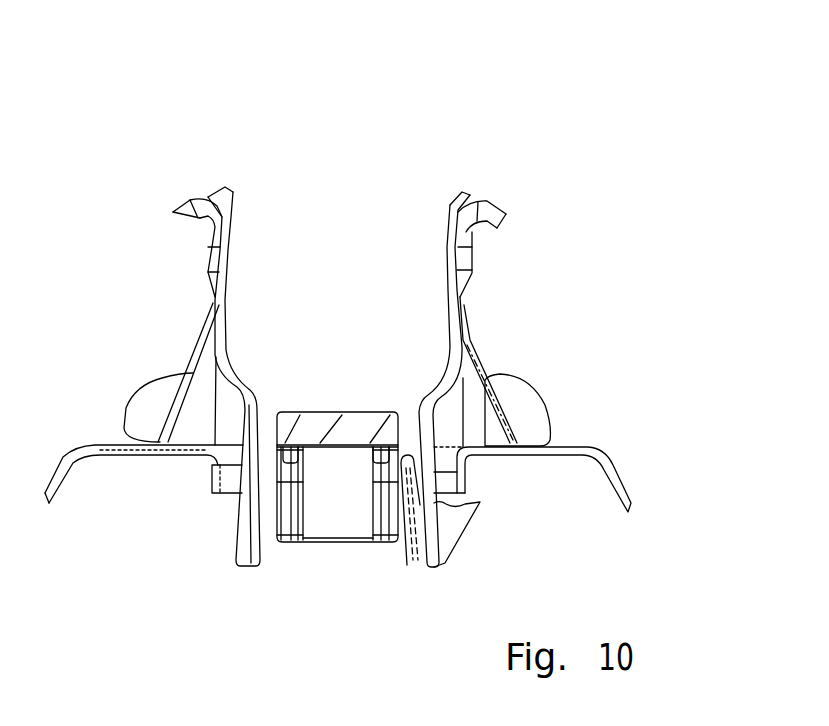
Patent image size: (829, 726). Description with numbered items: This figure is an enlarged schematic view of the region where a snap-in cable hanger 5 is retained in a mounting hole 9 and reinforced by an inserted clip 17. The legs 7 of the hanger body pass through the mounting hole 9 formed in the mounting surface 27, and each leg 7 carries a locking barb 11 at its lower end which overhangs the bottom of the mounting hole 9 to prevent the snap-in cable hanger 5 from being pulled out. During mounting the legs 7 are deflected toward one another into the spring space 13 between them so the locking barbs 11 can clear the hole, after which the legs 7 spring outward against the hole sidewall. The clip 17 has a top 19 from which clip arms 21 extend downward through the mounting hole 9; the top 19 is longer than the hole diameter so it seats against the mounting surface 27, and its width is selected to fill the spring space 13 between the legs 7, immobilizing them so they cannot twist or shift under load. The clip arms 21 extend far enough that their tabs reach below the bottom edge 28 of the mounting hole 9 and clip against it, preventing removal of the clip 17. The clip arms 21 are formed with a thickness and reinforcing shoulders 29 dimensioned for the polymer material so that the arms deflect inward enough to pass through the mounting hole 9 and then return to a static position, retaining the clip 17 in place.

The snap-in cable hanger 5 is at (229, 194).
The leg 7 is at (263, 512).
The mounting hole 9 is at (235, 485).
The locking barb 11 is at (450, 533).
The spring space 13 is at (337, 558).
The clip 17 is at (353, 428).
The top 19 is at (332, 413).
The clip arm 21 is at (325, 517).
The mounting surface 27 is at (578, 445).
The bottom edge 28 is at (465, 493).
The reinforcing shoulder 29 is at (387, 512).